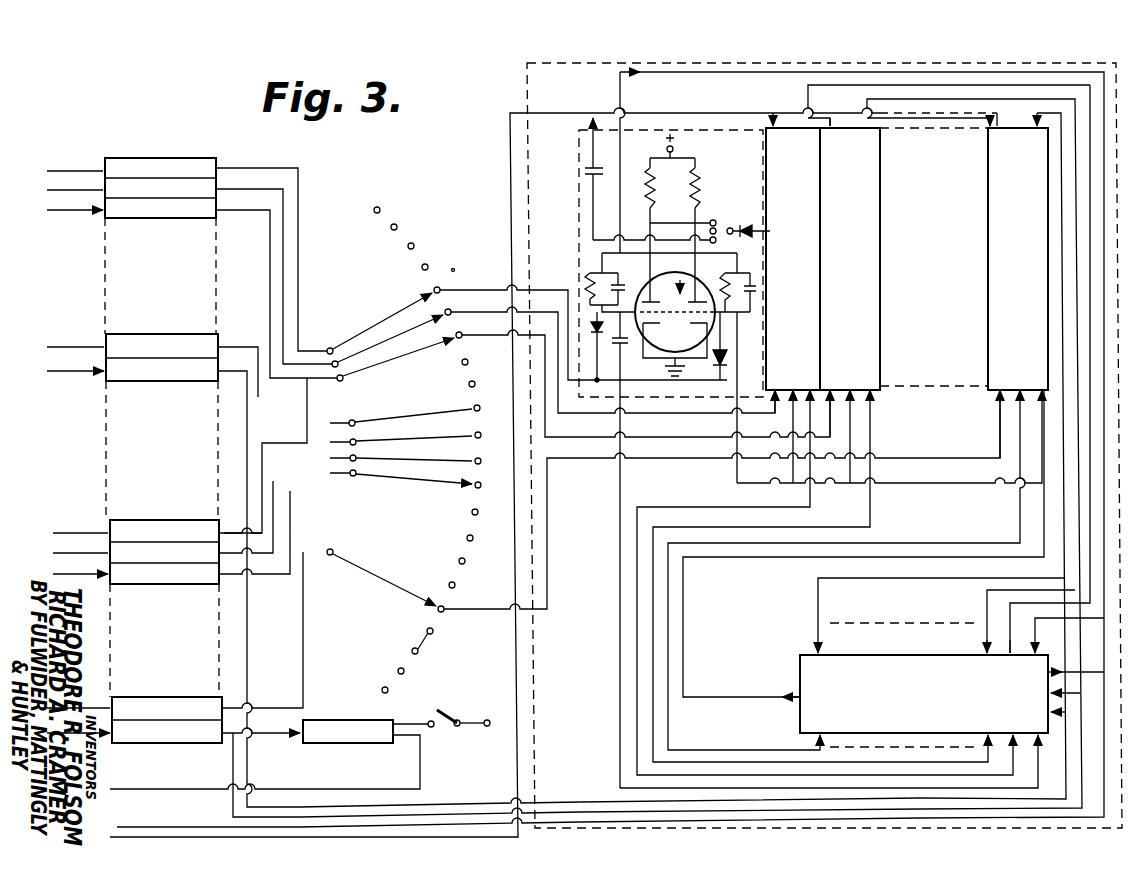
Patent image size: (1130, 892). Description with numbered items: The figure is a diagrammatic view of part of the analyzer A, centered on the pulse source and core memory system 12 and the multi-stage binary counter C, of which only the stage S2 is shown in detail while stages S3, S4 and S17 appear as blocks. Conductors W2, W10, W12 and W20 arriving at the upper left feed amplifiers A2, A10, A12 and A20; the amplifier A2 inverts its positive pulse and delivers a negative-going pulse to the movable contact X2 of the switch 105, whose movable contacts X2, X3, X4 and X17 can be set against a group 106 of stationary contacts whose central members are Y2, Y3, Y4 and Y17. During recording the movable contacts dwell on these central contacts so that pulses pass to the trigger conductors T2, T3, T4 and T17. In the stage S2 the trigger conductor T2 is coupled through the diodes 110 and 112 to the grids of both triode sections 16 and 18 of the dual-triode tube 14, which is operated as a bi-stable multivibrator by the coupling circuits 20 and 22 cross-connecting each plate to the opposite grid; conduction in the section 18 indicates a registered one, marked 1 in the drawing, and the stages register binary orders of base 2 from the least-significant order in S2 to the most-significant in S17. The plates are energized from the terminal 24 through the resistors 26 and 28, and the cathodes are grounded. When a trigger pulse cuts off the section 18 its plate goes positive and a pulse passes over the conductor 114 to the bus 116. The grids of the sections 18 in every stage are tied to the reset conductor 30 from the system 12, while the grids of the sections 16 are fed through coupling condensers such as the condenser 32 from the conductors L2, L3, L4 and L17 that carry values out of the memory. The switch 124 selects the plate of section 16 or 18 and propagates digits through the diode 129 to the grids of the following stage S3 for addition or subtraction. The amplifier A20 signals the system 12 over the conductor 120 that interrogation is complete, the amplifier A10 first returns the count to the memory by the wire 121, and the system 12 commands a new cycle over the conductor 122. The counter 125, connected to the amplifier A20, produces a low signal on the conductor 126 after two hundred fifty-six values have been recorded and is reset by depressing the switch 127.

The amplifier A2 is at (160, 171).
The conductor W2 is at (75, 172).
The amplifier A10 is at (182, 371).
The conductor W10 is at (75, 376).
The amplifier A12 is at (200, 532).
The conductor W12 is at (80, 532).
The amplifier A20 is at (207, 658).
The conductor W20 is at (95, 741).
The wire 121 is at (620, 460).
The movable contact X2 is at (328, 261).
The movable contact X3 is at (333, 278).
The movable contact X4 is at (339, 371).
The movable contact X17 is at (385, 580).
The stationary contact Y2 is at (583, 316).
The stationary contact Y3 is at (613, 352).
The stationary contact Y4 is at (644, 376).
The stationary contact Y17 is at (713, 499).
The contact 2 is at (446, 274).
The switch 105 is at (405, 429).
The group of stationary contacts 106 is at (429, 450).
The counter 125 is at (368, 721).
The conductor 126 is at (265, 762).
The switch 127 is at (469, 703).
The conductor 120 is at (644, 757).
The conductor 122 is at (614, 449).
The bus 116 is at (569, 465).
The analyzer A is at (795, 445).
The multi-stage electronic counter C is at (614, 263).
The conductor 114 is at (631, 179).
The counter stage S2 is at (686, 195).
The terminal 24 is at (652, 145).
The resistor 26 is at (660, 188).
The resistor 28 is at (713, 187).
The switch 124 is at (734, 211).
The diode 129 is at (772, 221).
The tube 1 is at (675, 314).
The triode section 16 is at (635, 278).
The triode section 18 is at (710, 278).
The coupling circuit 22 is at (647, 282).
The diode 110 is at (600, 326).
The coupling circuit 20 is at (737, 363).
The diode 112 is at (744, 346).
The coupling condenser 32 is at (613, 550).
The tube 14 is at (633, 371).
The counter stage S3 is at (793, 259).
The counter stage S4 is at (850, 259).
The counter stage S17 is at (1018, 259).
The trigger conductor T2 is at (666, 404).
The trigger conductor T3 is at (737, 418).
The trigger conductor T4 is at (770, 436).
The trigger conductor T17 is at (835, 431).
The reset conductor 30 is at (889, 444).
The conductor L2 is at (811, 637).
The conductor L3 is at (825, 582).
The conductor L4 is at (839, 576).
The conductor L17 is at (863, 543).
The pulse source and core memory 12 is at (906, 685).